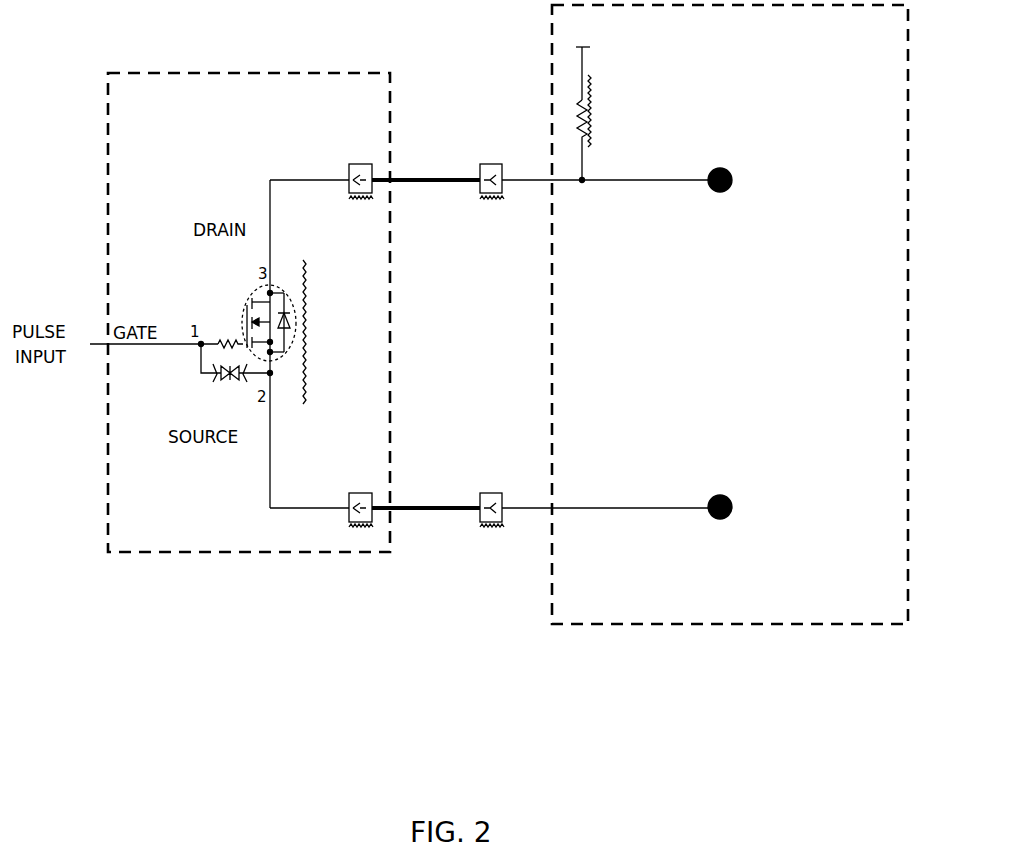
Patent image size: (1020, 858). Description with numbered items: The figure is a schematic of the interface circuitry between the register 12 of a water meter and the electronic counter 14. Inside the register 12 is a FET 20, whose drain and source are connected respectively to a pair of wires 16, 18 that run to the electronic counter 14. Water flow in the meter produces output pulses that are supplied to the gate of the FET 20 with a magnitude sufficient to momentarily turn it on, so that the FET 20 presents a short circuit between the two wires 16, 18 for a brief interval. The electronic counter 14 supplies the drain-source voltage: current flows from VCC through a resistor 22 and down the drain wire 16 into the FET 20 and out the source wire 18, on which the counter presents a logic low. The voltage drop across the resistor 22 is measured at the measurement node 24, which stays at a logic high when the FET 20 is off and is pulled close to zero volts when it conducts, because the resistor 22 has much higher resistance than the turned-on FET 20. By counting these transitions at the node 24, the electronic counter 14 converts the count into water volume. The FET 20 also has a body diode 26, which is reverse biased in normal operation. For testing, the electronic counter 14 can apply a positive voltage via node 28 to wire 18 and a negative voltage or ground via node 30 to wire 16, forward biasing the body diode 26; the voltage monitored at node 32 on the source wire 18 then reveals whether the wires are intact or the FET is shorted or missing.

The register 12 is at (252, 545).
The electronic counter 14 is at (768, 613).
The wire 16 is at (430, 178).
The wire 18 is at (430, 512).
The FET 20 is at (236, 322).
The resistor 22 is at (578, 112).
The measurement node 24 is at (722, 167).
The body diode 26 is at (293, 318).
The node 28 is at (490, 493).
The node 30 is at (490, 165).
The node 32 is at (722, 494).